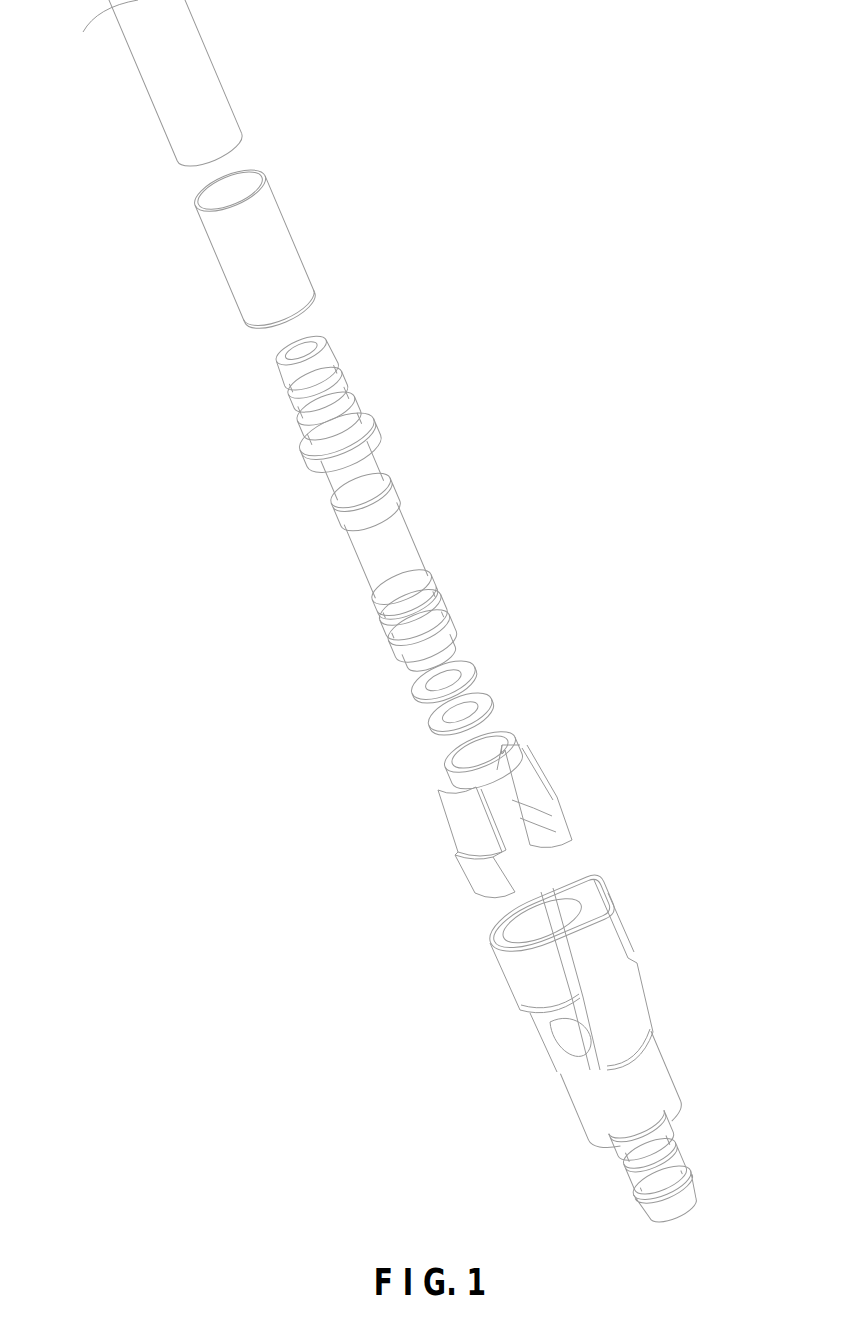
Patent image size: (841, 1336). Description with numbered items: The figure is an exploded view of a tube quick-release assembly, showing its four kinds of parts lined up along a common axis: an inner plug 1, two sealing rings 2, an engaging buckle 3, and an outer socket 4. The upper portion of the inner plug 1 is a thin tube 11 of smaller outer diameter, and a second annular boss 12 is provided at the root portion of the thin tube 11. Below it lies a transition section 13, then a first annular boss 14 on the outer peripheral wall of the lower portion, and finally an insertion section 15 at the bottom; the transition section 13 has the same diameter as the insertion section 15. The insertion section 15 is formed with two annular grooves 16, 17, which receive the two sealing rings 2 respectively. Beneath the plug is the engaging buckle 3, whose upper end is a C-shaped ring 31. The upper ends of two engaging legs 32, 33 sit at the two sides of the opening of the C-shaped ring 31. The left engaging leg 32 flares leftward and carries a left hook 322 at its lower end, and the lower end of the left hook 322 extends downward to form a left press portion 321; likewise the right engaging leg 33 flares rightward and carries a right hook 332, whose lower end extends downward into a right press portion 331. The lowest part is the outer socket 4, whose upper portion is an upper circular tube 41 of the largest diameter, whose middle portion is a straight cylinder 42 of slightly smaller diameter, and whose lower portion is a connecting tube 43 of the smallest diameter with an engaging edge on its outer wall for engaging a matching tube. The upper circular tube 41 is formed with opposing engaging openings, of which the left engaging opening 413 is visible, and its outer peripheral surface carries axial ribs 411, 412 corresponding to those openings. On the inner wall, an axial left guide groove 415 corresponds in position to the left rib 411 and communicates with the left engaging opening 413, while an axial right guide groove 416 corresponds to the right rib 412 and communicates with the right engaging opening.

The inner plug 1 is at (306, 340).
The thin tube 11 is at (222, 95).
The second annular boss 12 is at (393, 490).
The transition section 13 is at (393, 542).
The first annular boss 14 is at (383, 613).
The insertion section 15 is at (393, 636).
The annular groove 16 is at (435, 597).
The annular groove 17 is at (448, 623).
The sealing rings 2 is at (430, 722).
The engaging buckle 3 is at (508, 821).
The C-shaped ring 31 is at (480, 752).
The left engaging leg 32 is at (429, 853).
The left press portion 321 is at (477, 885).
The left hook 322 is at (458, 853).
The right engaging leg 33 is at (585, 796).
The right press portion 331 is at (570, 830).
The right hook 332 is at (557, 802).
The outer socket 4 is at (579, 1040).
The upper circular tube 41 is at (561, 962).
The left rib 411 is at (513, 982).
The right rib 412 is at (610, 922).
The left engaging opening 413 is at (560, 1027).
The left guide groove 415 is at (492, 935).
The right guide groove 416 is at (580, 885).
The straight cylinder 42 is at (657, 1078).
The connecting tube 43 is at (670, 1140).